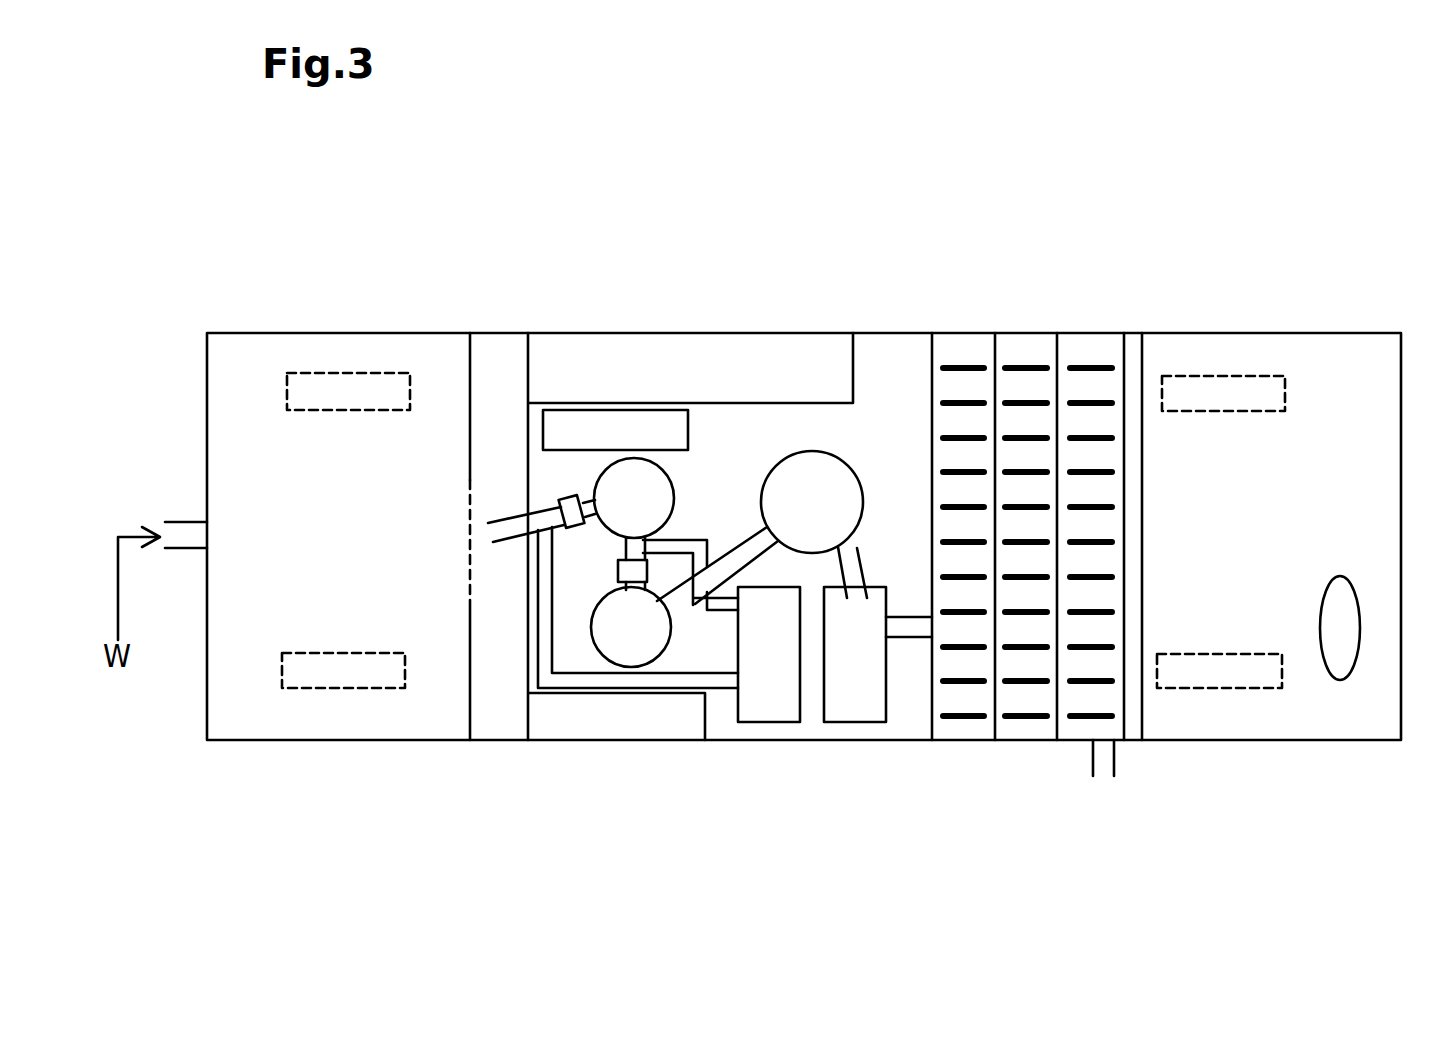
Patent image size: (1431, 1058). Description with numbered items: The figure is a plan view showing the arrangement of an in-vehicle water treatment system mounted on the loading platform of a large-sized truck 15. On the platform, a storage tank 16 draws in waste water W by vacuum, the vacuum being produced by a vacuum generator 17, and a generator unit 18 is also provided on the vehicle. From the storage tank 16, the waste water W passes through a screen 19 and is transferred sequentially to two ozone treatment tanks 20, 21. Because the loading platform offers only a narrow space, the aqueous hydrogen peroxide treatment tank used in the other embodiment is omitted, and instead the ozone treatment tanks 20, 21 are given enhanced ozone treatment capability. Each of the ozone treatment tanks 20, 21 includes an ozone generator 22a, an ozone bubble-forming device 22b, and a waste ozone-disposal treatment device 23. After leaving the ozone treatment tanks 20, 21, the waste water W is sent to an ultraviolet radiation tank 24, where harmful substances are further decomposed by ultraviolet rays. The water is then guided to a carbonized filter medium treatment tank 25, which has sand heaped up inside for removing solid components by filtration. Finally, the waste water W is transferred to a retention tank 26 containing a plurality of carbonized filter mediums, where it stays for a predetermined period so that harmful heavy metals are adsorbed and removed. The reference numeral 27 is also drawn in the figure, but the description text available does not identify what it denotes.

The large-sized truck 15 is at (1241, 376).
The storage tank 16 is at (318, 376).
The vacuum generator 17 is at (627, 740).
The generator unit 18 is at (715, 333).
The screen 19 is at (470, 545).
The ozone treatment tank 20 is at (597, 490).
The ozone treatment tank 21 is at (598, 656).
The ozone generator 22a is at (775, 722).
The ozone bubble-forming device 22b is at (578, 528).
The waste ozone-disposal treatment device 23 is at (640, 410).
The ultraviolet radiation tank 24 is at (824, 450).
The carbonized filter medium treatment tank 25 is at (880, 722).
The retention tank 26 is at (1007, 333).
The slot 27 is at (1083, 367).